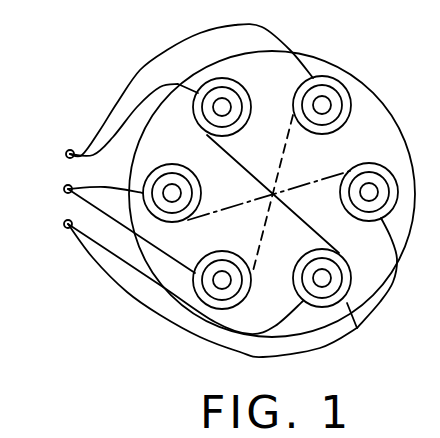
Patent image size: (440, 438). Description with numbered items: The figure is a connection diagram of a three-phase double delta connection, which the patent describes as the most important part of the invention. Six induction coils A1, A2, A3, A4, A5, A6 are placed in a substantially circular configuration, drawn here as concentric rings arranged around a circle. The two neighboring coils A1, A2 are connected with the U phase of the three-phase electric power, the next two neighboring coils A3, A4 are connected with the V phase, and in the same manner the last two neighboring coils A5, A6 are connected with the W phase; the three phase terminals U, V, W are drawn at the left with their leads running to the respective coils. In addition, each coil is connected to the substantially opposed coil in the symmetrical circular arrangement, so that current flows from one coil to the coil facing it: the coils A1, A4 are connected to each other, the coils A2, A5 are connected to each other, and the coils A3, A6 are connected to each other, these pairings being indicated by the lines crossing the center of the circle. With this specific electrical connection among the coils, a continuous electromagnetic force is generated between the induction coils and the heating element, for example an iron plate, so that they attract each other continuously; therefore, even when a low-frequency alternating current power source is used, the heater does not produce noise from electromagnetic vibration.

The induction coil A1 is at (339, 131).
The induction coil A2 is at (234, 80).
The induction coil A3 is at (170, 166).
The induction coil A4 is at (203, 251).
The induction coil A5 is at (361, 329).
The induction coil A6 is at (340, 209).
The U phase U is at (66, 154).
The V phase V is at (64, 189).
The W phase W is at (64, 224).